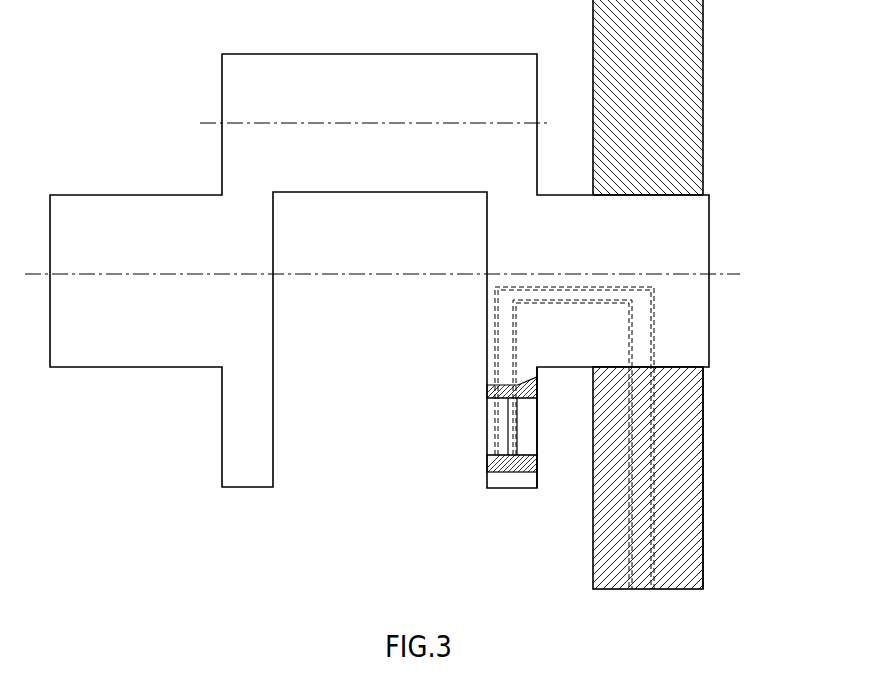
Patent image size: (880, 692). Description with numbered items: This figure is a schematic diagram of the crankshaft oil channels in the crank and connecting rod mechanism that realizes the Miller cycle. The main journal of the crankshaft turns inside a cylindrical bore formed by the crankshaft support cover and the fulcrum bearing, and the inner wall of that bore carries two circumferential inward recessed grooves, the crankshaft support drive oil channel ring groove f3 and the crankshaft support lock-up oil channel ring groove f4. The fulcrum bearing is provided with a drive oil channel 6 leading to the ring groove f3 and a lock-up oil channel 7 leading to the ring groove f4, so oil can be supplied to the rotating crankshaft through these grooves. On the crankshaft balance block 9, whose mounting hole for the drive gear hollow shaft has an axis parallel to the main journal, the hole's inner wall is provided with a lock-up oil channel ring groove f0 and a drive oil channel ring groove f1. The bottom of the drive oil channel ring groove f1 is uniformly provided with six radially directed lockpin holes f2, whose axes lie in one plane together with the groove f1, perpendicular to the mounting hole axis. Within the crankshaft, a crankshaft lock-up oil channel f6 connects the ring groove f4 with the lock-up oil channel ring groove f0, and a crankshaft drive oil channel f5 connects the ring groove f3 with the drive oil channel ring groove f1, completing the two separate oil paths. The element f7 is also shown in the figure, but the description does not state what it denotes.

The lock-up oil channel ring groove f0 is at (456, 405).
The drive oil channel ring groove f1 is at (434, 444).
The lockpin hole f2 is at (455, 493).
The crankshaft support drive oil channel ring groove f3 is at (693, 97).
The crankshaft support lock-up oil channel ring groove f4 is at (693, 145).
The crankshaft drive oil channel f5 is at (653, 369).
The crankshaft lock-up oil channel f6 is at (644, 416).
The fixing bolt f7 is at (535, 482).
The drive oil channel 6 is at (690, 456).
The lock-up oil channel 7 is at (745, 478).
The crankshaft balance block 9 is at (443, 494).